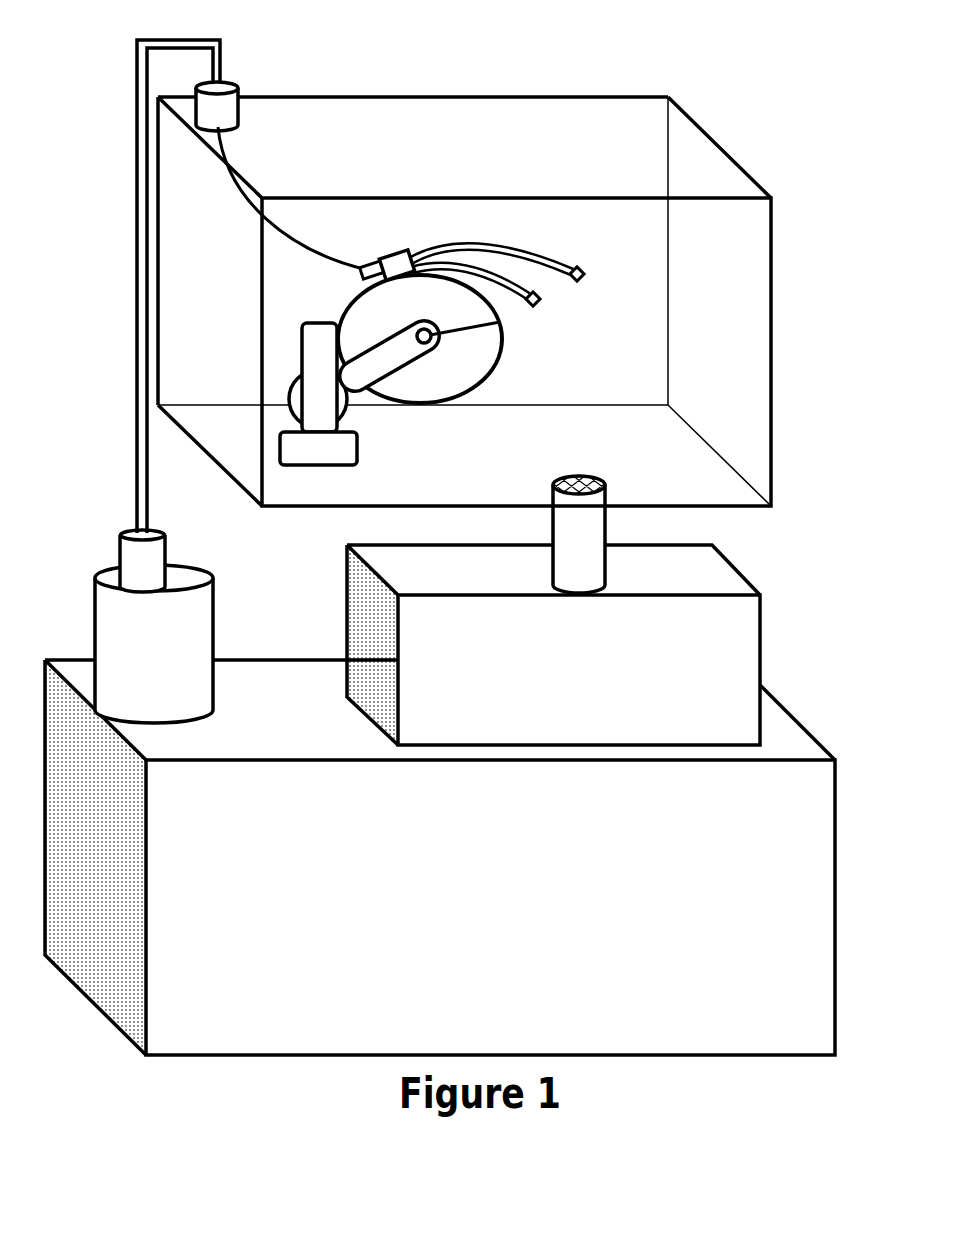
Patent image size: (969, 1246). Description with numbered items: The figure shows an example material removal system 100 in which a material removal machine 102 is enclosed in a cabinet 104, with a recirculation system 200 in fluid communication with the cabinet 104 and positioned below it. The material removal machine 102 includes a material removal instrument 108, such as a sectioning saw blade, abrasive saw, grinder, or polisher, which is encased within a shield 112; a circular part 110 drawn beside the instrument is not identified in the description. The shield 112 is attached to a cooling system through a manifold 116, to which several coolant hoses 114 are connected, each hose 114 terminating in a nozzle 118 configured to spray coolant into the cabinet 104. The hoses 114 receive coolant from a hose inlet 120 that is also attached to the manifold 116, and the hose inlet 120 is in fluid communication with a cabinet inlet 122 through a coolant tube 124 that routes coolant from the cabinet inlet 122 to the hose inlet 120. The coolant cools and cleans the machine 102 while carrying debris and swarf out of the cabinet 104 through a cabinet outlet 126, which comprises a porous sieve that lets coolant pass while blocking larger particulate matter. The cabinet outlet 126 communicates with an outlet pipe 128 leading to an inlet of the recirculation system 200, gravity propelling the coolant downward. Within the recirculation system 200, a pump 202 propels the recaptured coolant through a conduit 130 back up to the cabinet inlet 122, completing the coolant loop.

The material removal system 100 is at (471, 283).
The material removal machine 102 is at (433, 371).
The cabinet 104 is at (773, 353).
The material removal instrument 108 is at (420, 405).
The motor 110 is at (287, 396).
The shield 112 is at (472, 320).
The coolant hoses 114 is at (478, 260).
The manifold 116 is at (400, 253).
The nozzle 118 is at (534, 292).
The hose inlet 120 is at (377, 262).
The cabinet inlet 122 is at (245, 86).
The coolant tube 124 is at (230, 193).
The cabinet outlet 126 is at (604, 470).
The outlet pipe 128 is at (607, 533).
The conduit 130 is at (137, 405).
The recirculation system 200 is at (797, 691).
The pump 202 is at (80, 603).